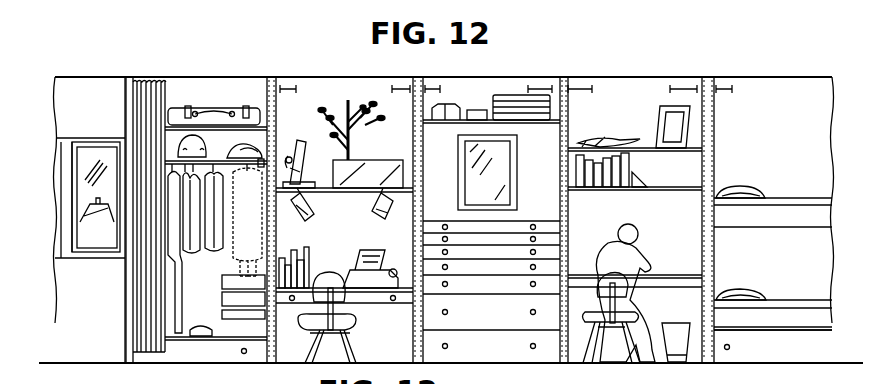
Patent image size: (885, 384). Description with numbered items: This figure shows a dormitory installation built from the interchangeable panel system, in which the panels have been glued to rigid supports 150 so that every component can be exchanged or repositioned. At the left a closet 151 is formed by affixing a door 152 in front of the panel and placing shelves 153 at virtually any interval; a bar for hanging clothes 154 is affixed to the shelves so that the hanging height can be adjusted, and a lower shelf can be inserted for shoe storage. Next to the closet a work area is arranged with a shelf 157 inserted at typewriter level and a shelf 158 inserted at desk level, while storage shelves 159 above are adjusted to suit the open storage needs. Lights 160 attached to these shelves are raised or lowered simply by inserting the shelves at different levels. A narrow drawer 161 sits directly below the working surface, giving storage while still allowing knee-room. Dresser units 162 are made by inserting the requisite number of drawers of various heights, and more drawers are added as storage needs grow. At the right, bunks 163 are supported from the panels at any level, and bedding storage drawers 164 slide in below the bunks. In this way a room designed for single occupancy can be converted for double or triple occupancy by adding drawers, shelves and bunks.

The rigid supports 150 is at (272, 103).
The closet 151 is at (211, 320).
The door 152 is at (160, 98).
The shelves 153 is at (262, 133).
The bar for hanging clothes 154 is at (340, 202).
The shelf 157 is at (358, 293).
The shelf 158 is at (662, 280).
The storage shelves 159 is at (651, 157).
The lights 160 is at (300, 222).
The narrow drawer 161 is at (352, 316).
The dresser units 162 is at (478, 352).
The bunks 163 is at (758, 212).
The bedding storage drawers 164 is at (756, 352).